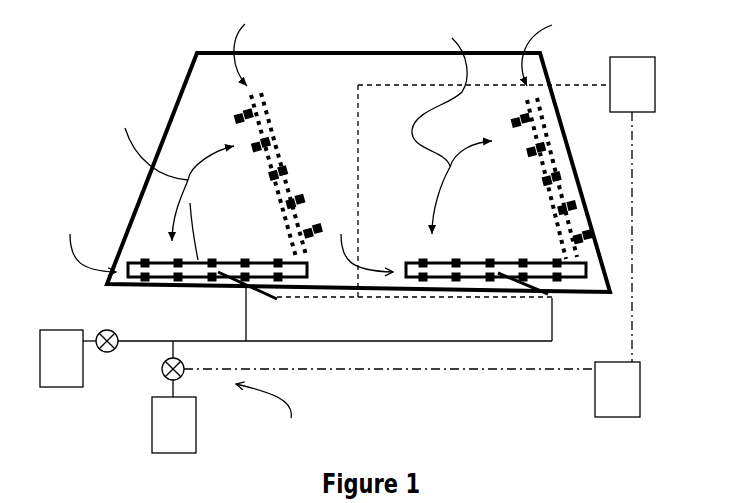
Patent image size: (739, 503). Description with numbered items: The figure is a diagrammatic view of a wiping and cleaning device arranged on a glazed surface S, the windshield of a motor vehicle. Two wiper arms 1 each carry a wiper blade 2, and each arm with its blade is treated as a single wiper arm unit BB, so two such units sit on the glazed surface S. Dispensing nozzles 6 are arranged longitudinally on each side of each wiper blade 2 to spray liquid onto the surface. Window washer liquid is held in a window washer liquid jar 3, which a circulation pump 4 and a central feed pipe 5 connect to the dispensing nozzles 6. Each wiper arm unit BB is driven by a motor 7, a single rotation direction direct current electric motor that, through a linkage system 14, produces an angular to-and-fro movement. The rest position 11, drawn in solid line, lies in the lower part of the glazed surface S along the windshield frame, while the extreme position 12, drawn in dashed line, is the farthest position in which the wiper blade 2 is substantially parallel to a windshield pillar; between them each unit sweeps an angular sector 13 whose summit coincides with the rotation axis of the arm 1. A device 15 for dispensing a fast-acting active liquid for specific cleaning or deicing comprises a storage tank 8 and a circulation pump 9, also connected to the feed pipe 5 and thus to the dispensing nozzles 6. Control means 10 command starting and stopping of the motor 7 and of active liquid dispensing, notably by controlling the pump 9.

The wiper arm 1 is at (277, 248).
The wiper blade 2 is at (268, 122).
The window washer liquid jar 3 is at (63, 378).
The circulation pump 4 is at (101, 331).
The central feed pipe 5 is at (215, 340).
The dispensing nozzles 6 is at (256, 147).
The motor 7 is at (642, 88).
The storage tank 8 is at (177, 443).
The circulation pump 9 is at (162, 372).
The control means 10 is at (641, 400).
The rest position 11 is at (224, 241).
The extreme position 12 is at (406, 48).
The angular sector 13 is at (300, 128).
The linkage system 14 is at (327, 297).
The device for dispensing active liquid 15 is at (268, 416).
The glazed surface S is at (218, 72).
The wiper arm unit BB is at (118, 248).